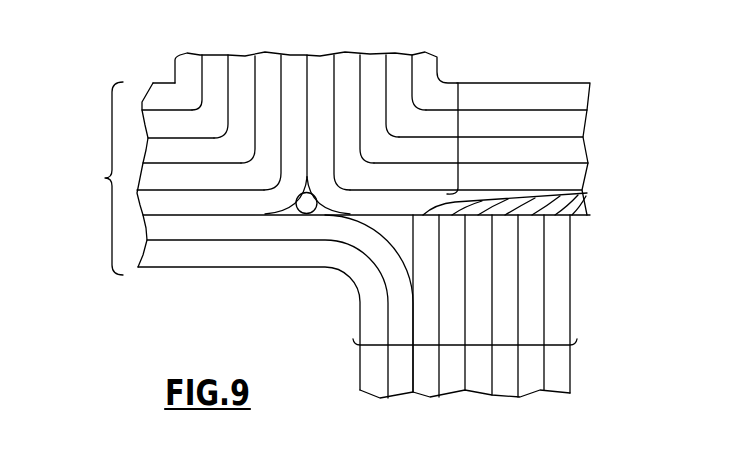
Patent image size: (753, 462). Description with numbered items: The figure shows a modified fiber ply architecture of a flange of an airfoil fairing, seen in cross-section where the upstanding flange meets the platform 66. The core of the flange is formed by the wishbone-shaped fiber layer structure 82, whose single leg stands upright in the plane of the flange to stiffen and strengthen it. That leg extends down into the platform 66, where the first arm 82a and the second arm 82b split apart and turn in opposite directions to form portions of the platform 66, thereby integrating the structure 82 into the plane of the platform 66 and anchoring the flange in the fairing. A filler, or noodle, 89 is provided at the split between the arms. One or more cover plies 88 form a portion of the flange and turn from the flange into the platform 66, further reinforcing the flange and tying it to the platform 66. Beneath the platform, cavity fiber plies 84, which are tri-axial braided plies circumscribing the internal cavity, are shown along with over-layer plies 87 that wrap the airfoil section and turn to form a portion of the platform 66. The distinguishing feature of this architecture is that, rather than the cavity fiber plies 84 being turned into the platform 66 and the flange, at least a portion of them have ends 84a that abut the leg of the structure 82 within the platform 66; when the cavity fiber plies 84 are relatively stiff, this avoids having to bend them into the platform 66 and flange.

The platform 66 is at (105, 178).
The wishbone-shaped fiber layer structure 82 is at (320, 133).
The first arm 82a is at (500, 195).
The second arm 82b is at (257, 202).
The cavity fiber plies 84 is at (507, 348).
The ends of cavity fiber plies 84a is at (581, 197).
The over-layer plies 87 is at (398, 348).
The cover plies 88 is at (193, 150).
The filler (noodle) 89 is at (306, 208).